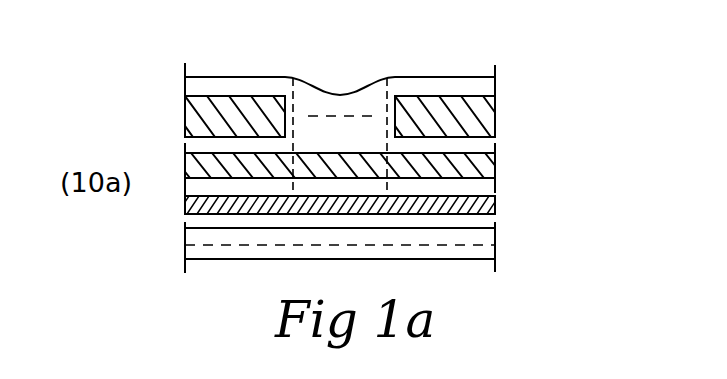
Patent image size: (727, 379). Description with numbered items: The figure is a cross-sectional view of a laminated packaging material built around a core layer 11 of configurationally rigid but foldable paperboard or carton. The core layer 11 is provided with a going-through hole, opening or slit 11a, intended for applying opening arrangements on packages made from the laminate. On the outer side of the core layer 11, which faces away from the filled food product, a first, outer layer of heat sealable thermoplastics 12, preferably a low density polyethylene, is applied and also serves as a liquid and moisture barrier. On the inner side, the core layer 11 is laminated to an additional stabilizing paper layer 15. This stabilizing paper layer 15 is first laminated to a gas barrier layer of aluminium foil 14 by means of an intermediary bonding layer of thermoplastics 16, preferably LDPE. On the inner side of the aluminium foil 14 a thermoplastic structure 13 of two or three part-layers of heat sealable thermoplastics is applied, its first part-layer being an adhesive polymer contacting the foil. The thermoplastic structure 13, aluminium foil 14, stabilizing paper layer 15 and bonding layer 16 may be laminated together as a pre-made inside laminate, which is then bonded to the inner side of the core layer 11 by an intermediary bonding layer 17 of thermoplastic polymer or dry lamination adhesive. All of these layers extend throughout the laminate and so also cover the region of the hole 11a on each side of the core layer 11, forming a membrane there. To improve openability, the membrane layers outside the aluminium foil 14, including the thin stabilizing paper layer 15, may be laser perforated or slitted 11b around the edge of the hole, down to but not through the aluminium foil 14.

The core layer 11 is at (487, 114).
The going-through hole 11a is at (362, 112).
The laser perforation 11b is at (295, 100).
The outer layer of heat sealable thermoplastics 12 is at (486, 85).
The thermoplastic structure 13 is at (483, 250).
The aluminium foil 14 is at (483, 208).
The stabilizing paper layer 15 is at (483, 168).
The intermediary bonding layer of thermoplastics 16 is at (485, 185).
The intermediary bonding layer 17 is at (486, 146).